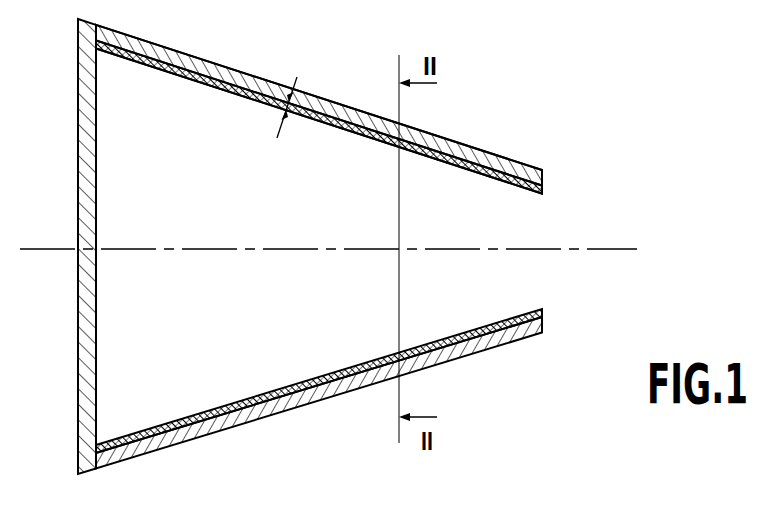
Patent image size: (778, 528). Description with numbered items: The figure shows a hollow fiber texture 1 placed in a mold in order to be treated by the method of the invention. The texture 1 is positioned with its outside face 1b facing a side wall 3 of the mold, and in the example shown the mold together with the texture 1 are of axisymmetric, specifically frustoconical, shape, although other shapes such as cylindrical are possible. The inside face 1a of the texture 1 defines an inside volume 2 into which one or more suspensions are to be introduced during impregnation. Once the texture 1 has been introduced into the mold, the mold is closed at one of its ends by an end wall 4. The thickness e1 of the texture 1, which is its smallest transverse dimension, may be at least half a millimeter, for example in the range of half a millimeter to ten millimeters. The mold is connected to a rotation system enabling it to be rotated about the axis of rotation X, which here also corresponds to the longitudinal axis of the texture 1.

The hollow fiber texture 1 is at (319, 241).
The inside face 1a is at (252, 99).
The outside face 1b is at (197, 63).
The inside volume 2 is at (152, 162).
The side wall 3 is at (497, 160).
The end wall 4 is at (86, 193).
The thickness e1 is at (289, 94).
The axis of rotation X is at (593, 252).